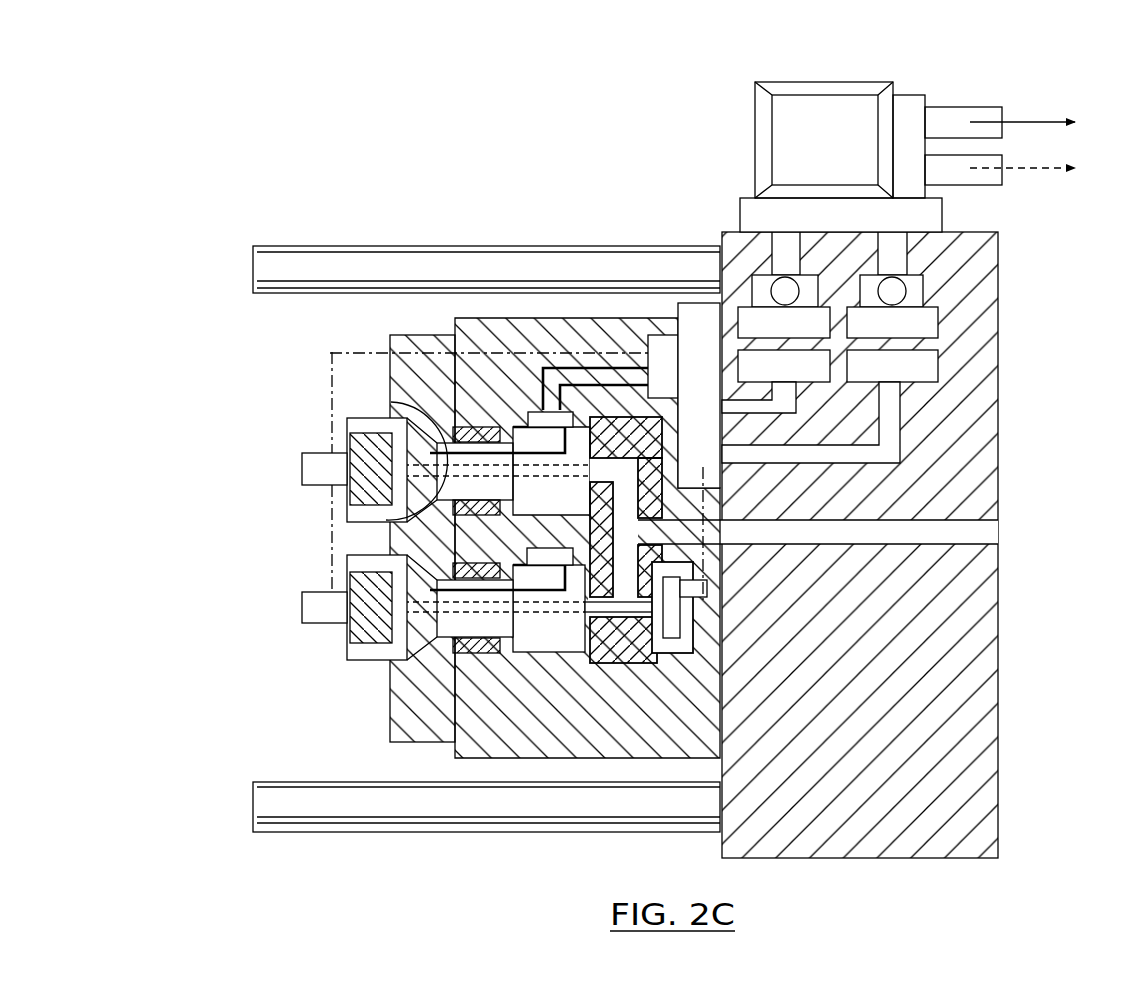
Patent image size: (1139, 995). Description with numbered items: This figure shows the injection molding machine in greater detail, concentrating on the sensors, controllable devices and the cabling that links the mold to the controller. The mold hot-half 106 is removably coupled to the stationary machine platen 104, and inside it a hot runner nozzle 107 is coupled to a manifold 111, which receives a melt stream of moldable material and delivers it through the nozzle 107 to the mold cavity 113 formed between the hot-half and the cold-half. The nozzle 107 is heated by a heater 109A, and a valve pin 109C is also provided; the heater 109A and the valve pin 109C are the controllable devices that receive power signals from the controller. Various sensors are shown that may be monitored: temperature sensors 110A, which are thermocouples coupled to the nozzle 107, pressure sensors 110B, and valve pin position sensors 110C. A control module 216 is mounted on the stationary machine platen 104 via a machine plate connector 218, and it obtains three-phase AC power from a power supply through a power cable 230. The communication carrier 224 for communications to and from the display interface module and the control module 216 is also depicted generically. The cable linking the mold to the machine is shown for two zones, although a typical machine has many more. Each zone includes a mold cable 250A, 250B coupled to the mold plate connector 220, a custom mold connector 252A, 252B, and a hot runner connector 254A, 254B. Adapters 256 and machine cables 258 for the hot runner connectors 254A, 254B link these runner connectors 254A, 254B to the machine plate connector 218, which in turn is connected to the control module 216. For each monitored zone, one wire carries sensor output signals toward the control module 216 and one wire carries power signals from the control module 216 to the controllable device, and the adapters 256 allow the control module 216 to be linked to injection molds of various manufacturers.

The stationary machine platen 104 is at (963, 812).
The mold hot-half 106 is at (613, 737).
The hot runner nozzle 107 is at (453, 500).
The heater 109A is at (453, 655).
The valve pin 109C is at (552, 617).
The temperature sensor 110A is at (440, 447).
The pressure sensor 110B is at (300, 467).
The valve pin position sensor 110C is at (703, 560).
The manifold 111 is at (605, 650).
The mold cavity 113 is at (372, 617).
The control module 216 is at (785, 125).
The machine plate connector 218 is at (753, 207).
The mold plate connector 220 is at (692, 315).
The communication carrier 224 is at (993, 178).
The power cable 230 is at (983, 110).
The mold cable 250A is at (770, 413).
The mold cable 250B is at (840, 453).
The custom mold connector 252A is at (827, 368).
The custom mold connector 252B is at (833, 322).
The hot runner connector 254A is at (892, 368).
The hot runner connector 254B is at (938, 325).
The adapter 256 is at (902, 292).
The machine cable 258 is at (895, 252).